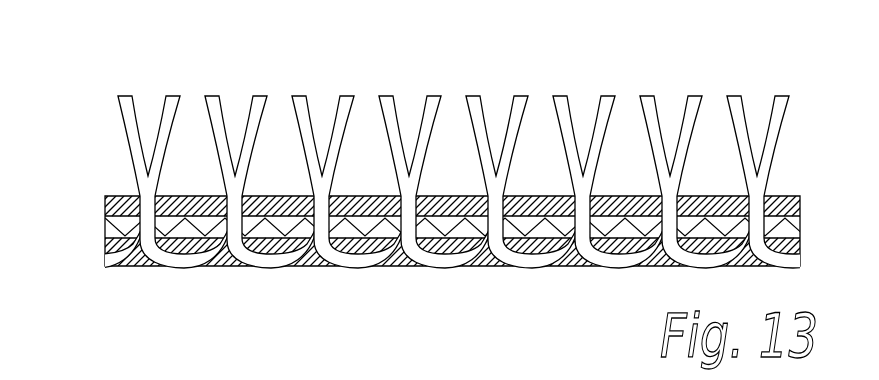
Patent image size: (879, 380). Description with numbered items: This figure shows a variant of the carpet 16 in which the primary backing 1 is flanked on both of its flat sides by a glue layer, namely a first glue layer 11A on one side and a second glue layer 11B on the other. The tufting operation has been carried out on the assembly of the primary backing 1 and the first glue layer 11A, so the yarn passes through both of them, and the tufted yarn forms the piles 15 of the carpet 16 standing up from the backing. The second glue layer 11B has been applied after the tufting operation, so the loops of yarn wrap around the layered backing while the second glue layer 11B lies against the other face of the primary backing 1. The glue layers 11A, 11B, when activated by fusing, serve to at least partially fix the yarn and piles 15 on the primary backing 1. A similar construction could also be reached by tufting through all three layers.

The primary backing 1 is at (429, 252).
The first glue layer 11A is at (357, 268).
The second glue layer 11B is at (394, 268).
The piles 15 is at (166, 125).
The carpet 16 is at (432, 178).